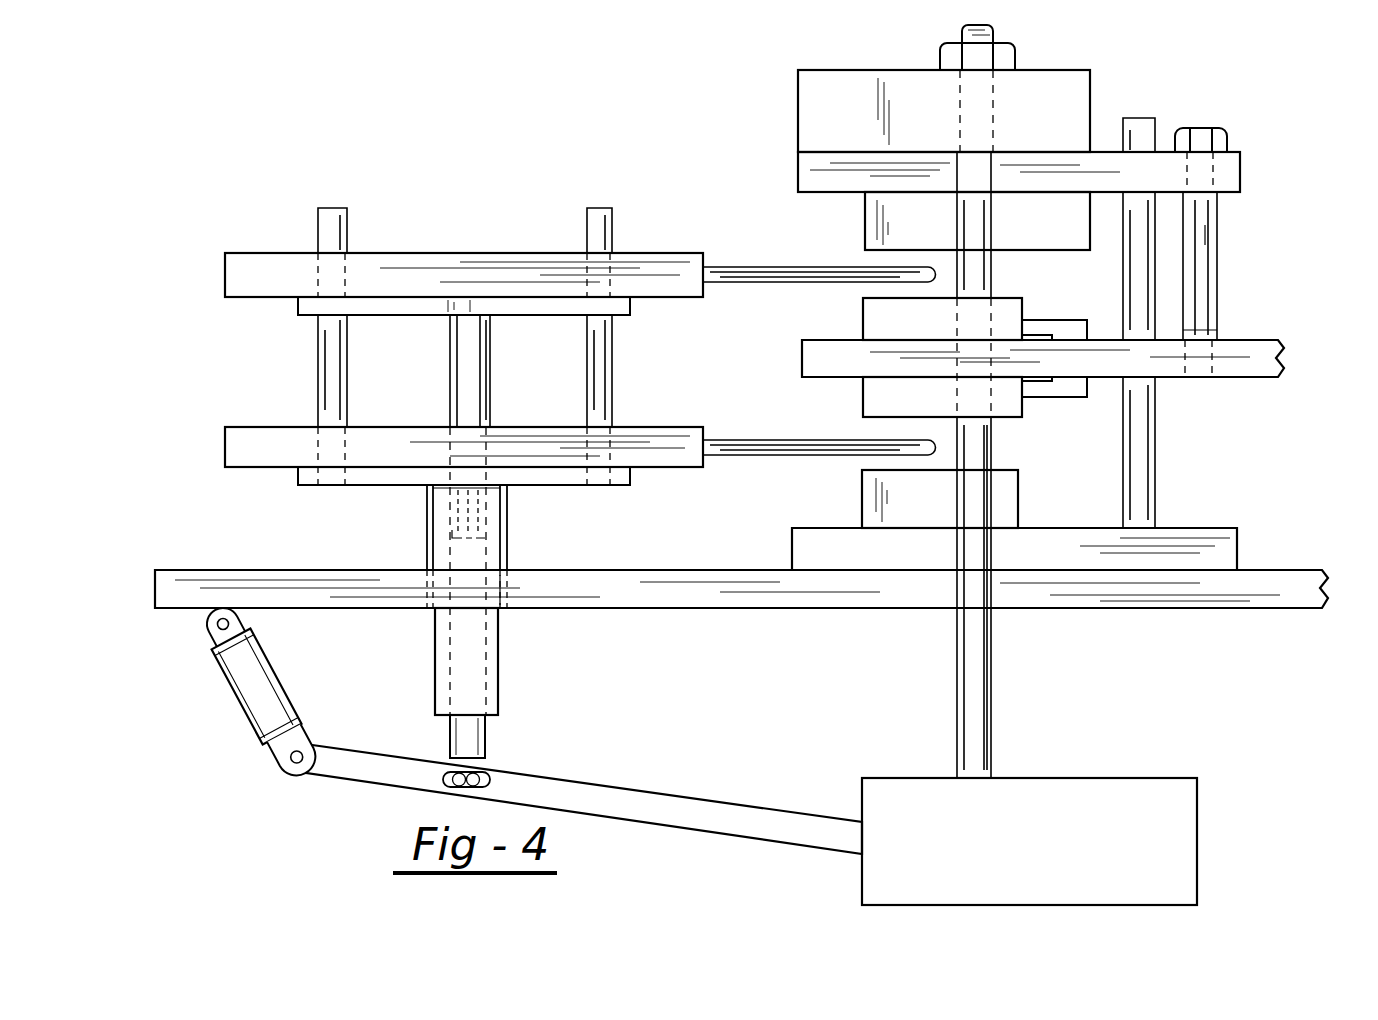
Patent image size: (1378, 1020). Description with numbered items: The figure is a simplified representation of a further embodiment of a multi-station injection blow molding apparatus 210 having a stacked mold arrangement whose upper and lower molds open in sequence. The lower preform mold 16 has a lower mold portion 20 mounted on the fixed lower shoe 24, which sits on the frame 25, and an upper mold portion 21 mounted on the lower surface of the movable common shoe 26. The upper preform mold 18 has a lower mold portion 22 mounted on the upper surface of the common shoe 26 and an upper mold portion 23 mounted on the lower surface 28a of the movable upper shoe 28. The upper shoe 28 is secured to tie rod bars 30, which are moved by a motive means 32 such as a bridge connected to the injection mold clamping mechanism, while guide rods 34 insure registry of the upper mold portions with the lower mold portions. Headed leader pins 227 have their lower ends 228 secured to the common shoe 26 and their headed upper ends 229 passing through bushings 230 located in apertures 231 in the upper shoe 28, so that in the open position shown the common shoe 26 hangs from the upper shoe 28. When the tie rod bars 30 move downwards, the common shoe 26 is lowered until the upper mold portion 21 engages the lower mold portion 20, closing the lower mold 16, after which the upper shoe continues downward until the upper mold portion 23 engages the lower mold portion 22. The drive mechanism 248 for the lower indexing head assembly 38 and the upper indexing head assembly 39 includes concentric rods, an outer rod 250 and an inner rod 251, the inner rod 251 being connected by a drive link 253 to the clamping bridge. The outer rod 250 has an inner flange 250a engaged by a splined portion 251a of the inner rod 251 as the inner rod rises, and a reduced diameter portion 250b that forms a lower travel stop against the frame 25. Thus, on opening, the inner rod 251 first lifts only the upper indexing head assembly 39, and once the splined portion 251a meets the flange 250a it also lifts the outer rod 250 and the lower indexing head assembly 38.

The lower preform mold 16 is at (1024, 405).
The upper preform mold 18 is at (1087, 328).
The lower mold portion 20 is at (862, 502).
The upper mold portion 21 is at (863, 396).
The lower mold portion 22 is at (863, 318).
The upper mold portion 23 is at (865, 210).
The fixed lower shoe 24 is at (1185, 530).
The frame 25 is at (1260, 570).
The movable common shoe 26 is at (1296, 335).
The movable upper shoe 28 is at (1240, 170).
The lower surface of upper shoe 28a is at (1110, 152).
The tie rod bars 30 is at (989, 700).
The motive means 32 is at (1029, 841).
The guide rods 34 is at (1155, 463).
The lower indexing head assembly 38 is at (705, 511).
The upper indexing head assembly 39 is at (715, 353).
The multi-station injection blow molding apparatus 210 is at (390, 836).
The headed leader pins 227 is at (1196, 287).
The lower ends of leader pins 228 is at (1220, 335).
The headed upper ends of leader pins 229 is at (1230, 142).
The bushings 230 is at (1214, 240).
The apertures 231 is at (1218, 198).
The drive mechanism 248 is at (410, 738).
The outer rod 250 is at (500, 655).
The inner flange 250a is at (427, 487).
The reduced diameter portion 250b is at (512, 582).
The inner rod 251 is at (487, 745).
The splined portion 251a is at (447, 525).
The drive link 253 is at (668, 800).